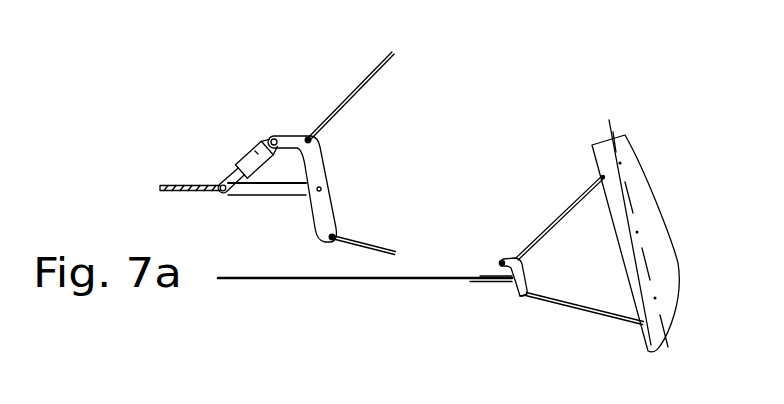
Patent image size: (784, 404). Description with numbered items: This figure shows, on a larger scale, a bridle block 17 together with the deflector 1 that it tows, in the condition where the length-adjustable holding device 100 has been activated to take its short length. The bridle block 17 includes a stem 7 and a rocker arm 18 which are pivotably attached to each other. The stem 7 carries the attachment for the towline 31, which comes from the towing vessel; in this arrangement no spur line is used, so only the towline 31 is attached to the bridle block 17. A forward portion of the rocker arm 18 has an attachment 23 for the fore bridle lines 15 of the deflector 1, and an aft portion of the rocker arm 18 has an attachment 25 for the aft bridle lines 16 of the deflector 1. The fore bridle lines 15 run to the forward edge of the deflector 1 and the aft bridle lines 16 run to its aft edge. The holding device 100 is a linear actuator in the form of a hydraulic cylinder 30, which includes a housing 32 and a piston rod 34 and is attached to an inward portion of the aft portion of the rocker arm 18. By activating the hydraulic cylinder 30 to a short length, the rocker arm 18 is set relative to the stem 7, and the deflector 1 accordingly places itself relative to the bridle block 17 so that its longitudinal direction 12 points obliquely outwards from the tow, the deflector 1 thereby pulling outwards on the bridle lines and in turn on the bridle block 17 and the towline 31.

The holding device 100 is at (232, 141).
The bridle block 17 is at (268, 120).
The aft bridle lines 16 is at (362, 87).
The attachment 25 is at (308, 138).
The housing 32 is at (258, 150).
The hydraulic cylinder 30 is at (238, 162).
The piston rod 34 is at (219, 184).
The towline 31 is at (160, 186).
The stem 7 is at (243, 190).
The rocker arm 18 is at (312, 196).
The attachment 23 is at (326, 238).
The fore bridle lines 15 is at (357, 242).
The deflector 1 is at (647, 208).
The longitudinal direction 12 is at (685, 400).